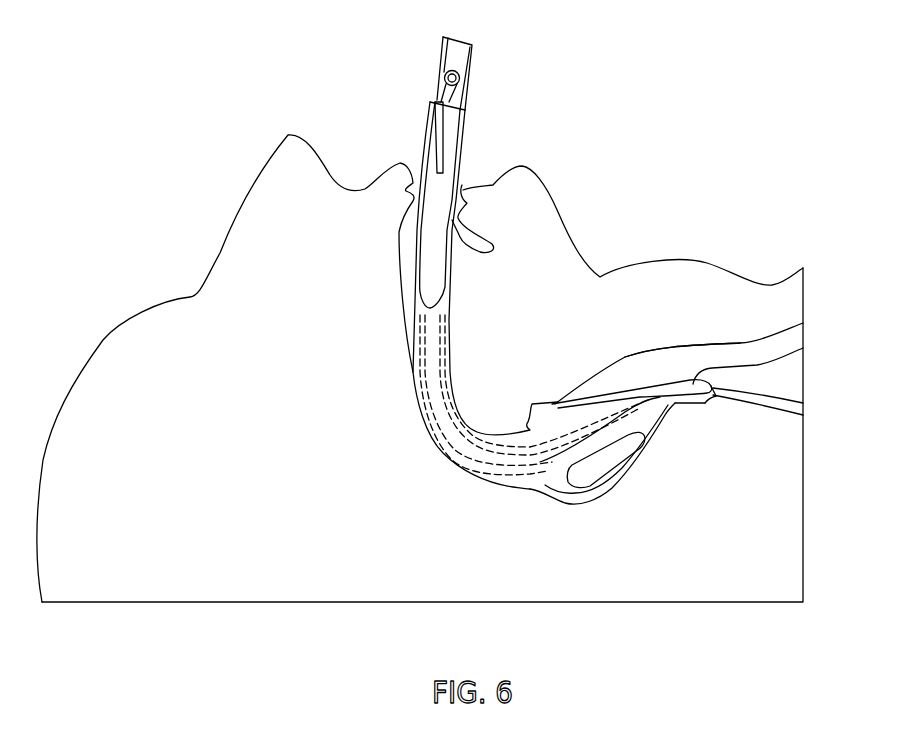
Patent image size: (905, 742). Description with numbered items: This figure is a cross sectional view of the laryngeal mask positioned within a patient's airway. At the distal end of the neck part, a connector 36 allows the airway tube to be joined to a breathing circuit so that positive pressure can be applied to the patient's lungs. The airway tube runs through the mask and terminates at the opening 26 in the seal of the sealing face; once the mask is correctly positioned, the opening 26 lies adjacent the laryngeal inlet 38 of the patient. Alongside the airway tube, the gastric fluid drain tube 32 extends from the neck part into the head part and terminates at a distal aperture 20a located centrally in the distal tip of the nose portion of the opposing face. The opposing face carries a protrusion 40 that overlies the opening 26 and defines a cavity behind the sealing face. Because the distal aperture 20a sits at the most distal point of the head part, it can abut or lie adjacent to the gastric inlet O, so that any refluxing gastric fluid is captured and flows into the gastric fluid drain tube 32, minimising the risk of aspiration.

The connector 36 is at (442, 53).
The opening 26 is at (600, 383).
The gastric fluid drain tube 32 is at (705, 403).
The protrusion 40 is at (585, 490).
The laryngeal inlet 38 is at (656, 362).
The gastric inlet O is at (730, 405).
The distal aperture 20a is at (708, 399).